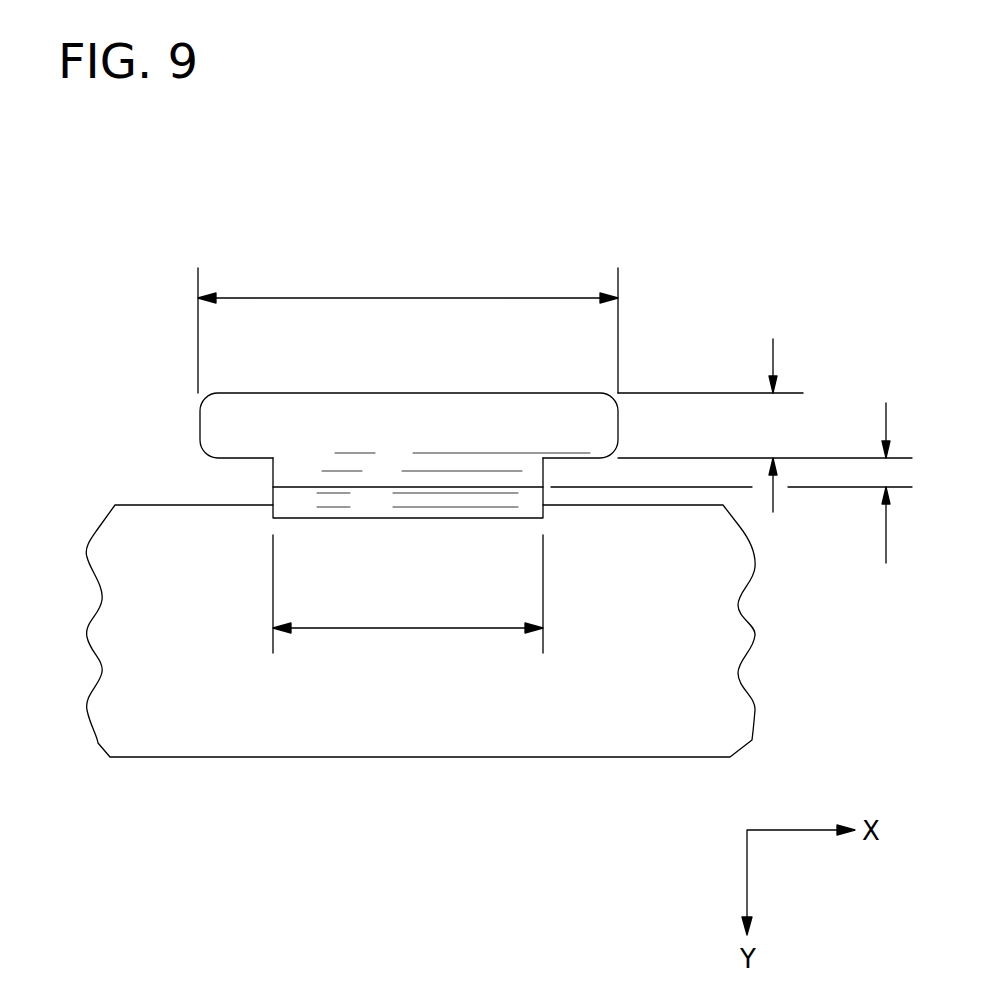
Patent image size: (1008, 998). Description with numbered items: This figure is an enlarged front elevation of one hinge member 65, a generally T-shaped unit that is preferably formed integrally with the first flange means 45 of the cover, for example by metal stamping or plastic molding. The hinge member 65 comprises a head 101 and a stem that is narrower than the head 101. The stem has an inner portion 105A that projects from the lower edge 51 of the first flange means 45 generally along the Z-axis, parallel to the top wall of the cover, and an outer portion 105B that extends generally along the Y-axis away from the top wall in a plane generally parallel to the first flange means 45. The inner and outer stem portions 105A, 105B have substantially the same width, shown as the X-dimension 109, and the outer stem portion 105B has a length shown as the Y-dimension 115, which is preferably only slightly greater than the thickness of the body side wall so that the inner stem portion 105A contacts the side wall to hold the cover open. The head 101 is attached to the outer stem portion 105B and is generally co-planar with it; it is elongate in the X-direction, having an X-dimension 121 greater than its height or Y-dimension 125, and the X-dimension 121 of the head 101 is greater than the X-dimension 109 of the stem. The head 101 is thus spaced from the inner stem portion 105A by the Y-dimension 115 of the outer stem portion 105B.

The first flange means 45 is at (138, 742).
The lower edge 51 is at (628, 506).
The hinge member 65 is at (620, 388).
The head 101 is at (215, 413).
The inner portion of stem 105A is at (305, 487).
The outer portion of stem 105B is at (273, 465).
The X-dimension of stem 109 is at (357, 628).
The Y-dimension of outer stem portion 115 is at (886, 563).
The X-dimension of head 121 is at (343, 298).
The Y-dimension of head 125 is at (773, 339).